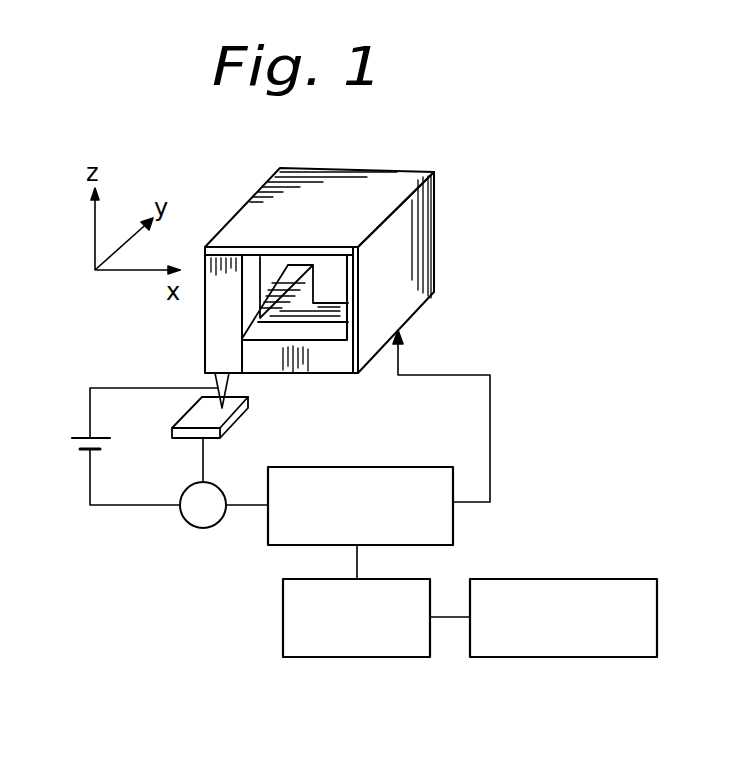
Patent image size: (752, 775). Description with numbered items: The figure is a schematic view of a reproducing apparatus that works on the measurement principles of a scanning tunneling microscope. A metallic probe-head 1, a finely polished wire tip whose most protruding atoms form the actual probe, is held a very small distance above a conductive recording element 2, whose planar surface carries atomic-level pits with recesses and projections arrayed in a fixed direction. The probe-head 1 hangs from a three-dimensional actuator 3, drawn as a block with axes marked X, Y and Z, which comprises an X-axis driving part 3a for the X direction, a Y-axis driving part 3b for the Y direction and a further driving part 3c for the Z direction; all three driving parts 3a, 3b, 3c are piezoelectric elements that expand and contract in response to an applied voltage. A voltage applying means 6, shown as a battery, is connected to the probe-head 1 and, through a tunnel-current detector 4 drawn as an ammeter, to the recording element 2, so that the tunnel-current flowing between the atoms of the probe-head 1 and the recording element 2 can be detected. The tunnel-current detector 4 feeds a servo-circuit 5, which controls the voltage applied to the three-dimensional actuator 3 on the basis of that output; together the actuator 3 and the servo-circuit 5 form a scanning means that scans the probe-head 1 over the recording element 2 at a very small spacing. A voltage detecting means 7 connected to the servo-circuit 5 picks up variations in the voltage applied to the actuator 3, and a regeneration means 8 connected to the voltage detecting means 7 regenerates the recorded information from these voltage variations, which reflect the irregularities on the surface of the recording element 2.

The probe-head 1 is at (227, 380).
The recording element 2 is at (232, 425).
The three-dimensional actuator 3 is at (437, 241).
The X-axis driving part 3a is at (333, 360).
The Y-axis driving part 3b is at (275, 277).
The X-axis driving part 3c is at (213, 332).
The tunnel-current detector 4 is at (188, 523).
The servo-circuit 5 is at (417, 472).
The voltage applying means 6 is at (76, 452).
The voltage detecting means 7 is at (396, 650).
The regeneration means 8 is at (545, 650).